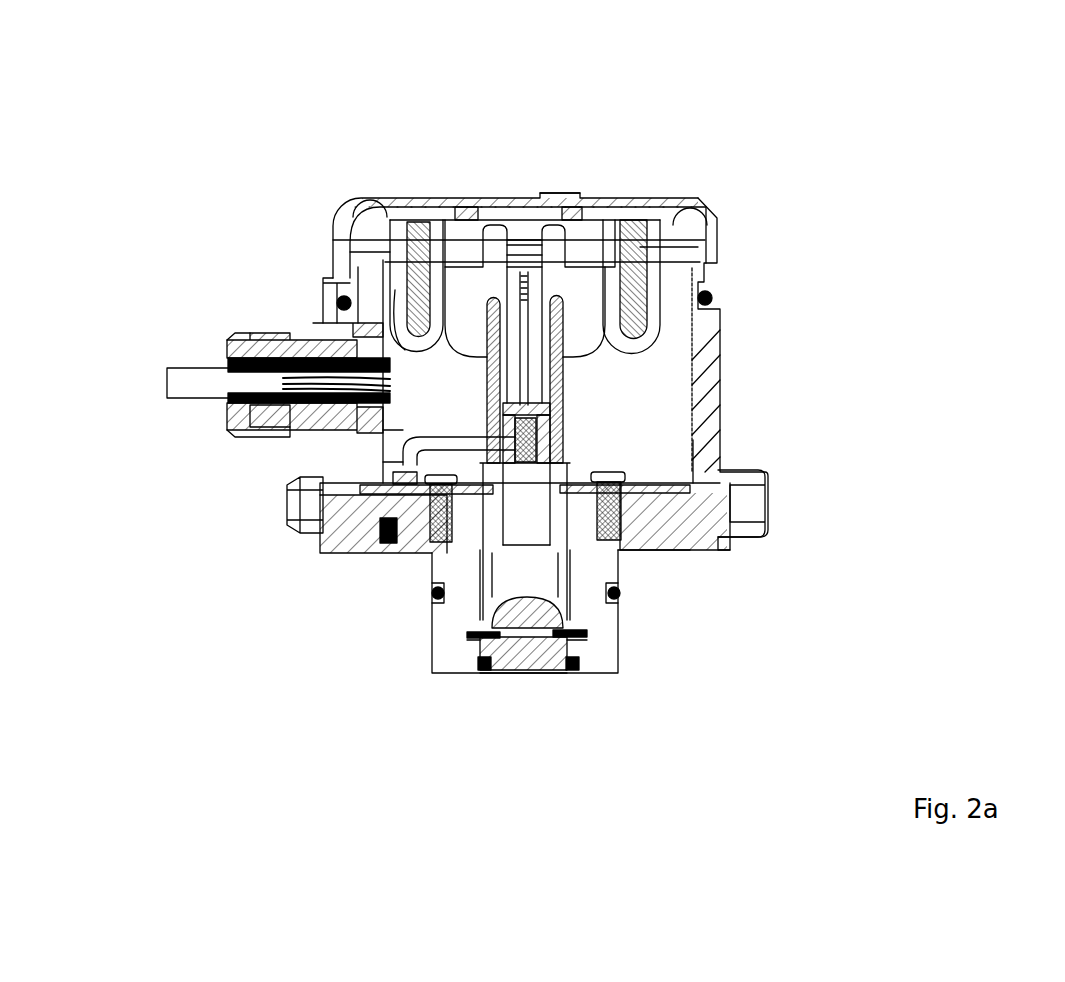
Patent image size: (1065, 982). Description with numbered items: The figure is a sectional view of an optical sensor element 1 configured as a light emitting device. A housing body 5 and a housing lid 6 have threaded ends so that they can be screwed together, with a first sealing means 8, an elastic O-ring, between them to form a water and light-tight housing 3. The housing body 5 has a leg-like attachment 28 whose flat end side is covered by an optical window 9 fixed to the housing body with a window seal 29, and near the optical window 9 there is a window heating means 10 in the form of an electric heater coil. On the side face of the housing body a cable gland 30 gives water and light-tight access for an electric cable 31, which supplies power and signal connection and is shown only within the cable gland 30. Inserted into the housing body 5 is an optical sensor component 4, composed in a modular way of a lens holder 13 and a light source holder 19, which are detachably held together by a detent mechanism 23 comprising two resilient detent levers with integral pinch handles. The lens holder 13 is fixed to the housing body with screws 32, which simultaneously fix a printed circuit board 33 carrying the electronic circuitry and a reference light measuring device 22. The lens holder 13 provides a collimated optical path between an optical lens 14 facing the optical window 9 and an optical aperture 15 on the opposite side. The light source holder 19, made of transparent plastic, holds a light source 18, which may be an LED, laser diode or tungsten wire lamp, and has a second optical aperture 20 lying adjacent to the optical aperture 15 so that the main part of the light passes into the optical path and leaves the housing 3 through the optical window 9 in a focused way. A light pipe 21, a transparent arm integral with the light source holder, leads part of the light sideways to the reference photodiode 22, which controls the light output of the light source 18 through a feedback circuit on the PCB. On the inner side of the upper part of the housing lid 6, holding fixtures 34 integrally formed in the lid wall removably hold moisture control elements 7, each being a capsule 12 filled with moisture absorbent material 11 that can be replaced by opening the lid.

The sensor element 1 is at (402, 172).
The housing 3 is at (738, 326).
The optical sensor component 4 is at (567, 400).
The housing body 5 is at (450, 617).
The housing lid 6 is at (569, 196).
The moisture control element 7 is at (642, 278).
The first sealing means 8 is at (337, 296).
The optical window 9 is at (527, 666).
The window heating means 10 is at (592, 648).
The moisture absorbent material 11 is at (403, 245).
The capsule 12 is at (397, 290).
The lens holder 13 is at (567, 508).
The optical lens 14 is at (542, 608).
The optical aperture 15 is at (527, 467).
The light source 18 is at (537, 437).
The light source holder 19 is at (552, 418).
The second optical aperture 20 is at (440, 548).
The light pipe 21 is at (403, 443).
The reference light measuring device 22 is at (390, 492).
The detent mechanism 23 is at (565, 334).
The leg-like attachment 28 is at (433, 598).
The window seal 29 is at (476, 674).
The cable gland 30 is at (262, 410).
The electric cable 31 is at (205, 365).
The screws 32 is at (615, 492).
The printed circuit board 33 is at (393, 470).
The holding fixtures 34 is at (440, 225).